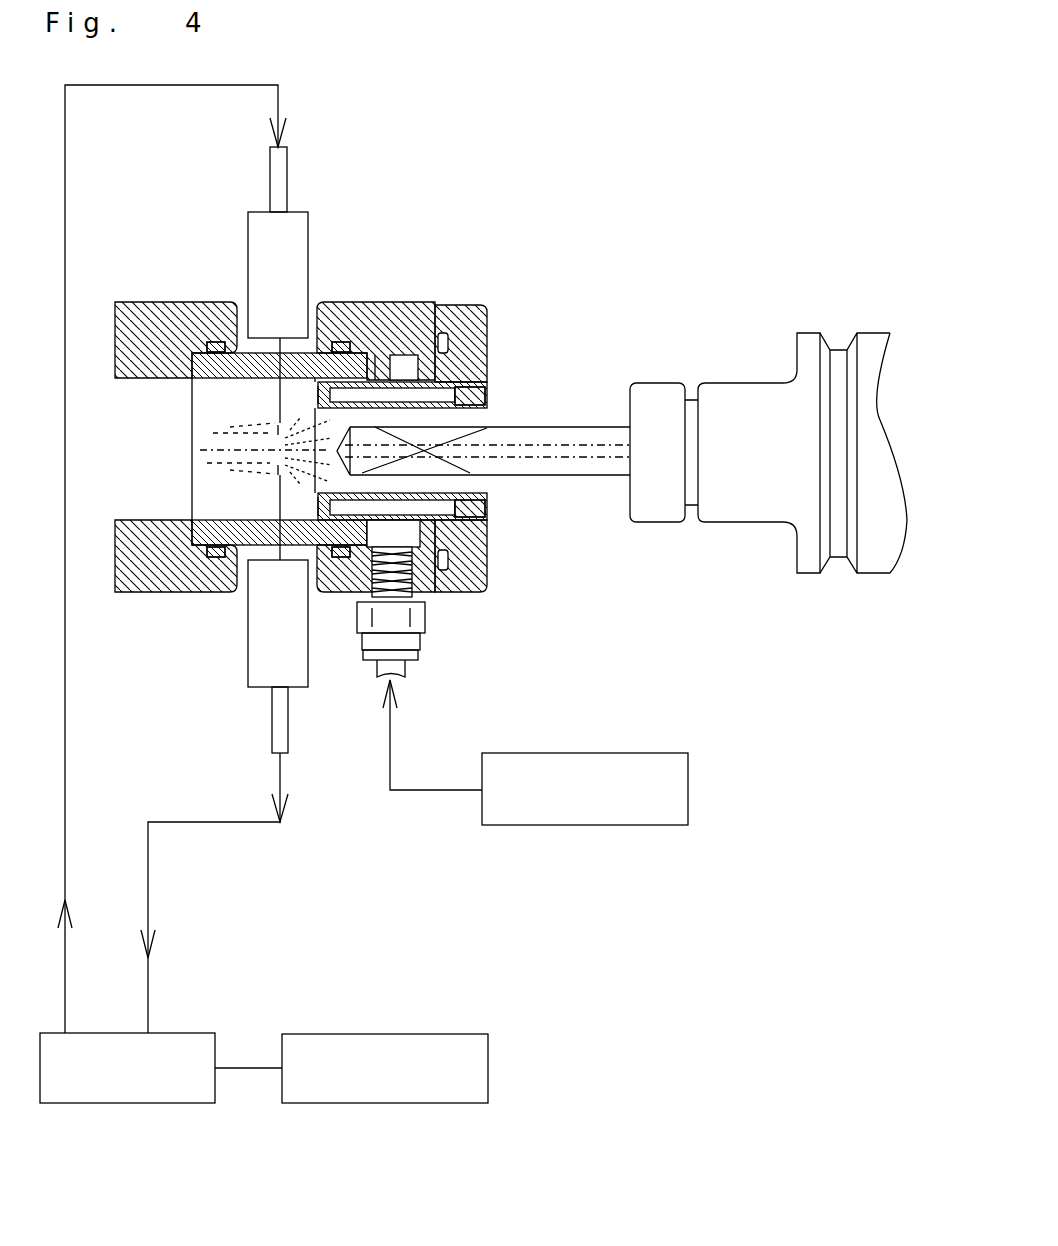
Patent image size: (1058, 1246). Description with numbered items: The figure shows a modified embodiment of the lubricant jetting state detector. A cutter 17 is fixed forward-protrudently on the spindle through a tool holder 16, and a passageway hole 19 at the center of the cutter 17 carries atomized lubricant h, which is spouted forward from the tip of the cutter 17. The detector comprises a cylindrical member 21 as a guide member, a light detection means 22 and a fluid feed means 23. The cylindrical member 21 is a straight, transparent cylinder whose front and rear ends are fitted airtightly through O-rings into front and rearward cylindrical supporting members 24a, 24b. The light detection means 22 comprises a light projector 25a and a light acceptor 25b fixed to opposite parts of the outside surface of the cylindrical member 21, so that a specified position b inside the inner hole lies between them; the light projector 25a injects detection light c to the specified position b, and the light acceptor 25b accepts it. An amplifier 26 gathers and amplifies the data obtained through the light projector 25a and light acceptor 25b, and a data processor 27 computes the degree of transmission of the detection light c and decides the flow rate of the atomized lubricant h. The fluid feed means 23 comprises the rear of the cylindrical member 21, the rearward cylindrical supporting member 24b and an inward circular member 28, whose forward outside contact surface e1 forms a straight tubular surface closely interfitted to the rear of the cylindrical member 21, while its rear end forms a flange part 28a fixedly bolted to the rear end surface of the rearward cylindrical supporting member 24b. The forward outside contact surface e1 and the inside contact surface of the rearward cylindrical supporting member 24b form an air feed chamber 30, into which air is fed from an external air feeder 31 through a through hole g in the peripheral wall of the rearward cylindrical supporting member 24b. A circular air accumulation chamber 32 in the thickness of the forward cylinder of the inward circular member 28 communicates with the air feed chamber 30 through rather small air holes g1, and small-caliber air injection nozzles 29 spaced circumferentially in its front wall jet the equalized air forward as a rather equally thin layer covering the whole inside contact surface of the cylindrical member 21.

The tool holder 16 is at (743, 395).
The cutter 17 is at (540, 475).
The passageway hole 19 is at (608, 475).
The cylindrical member 21 is at (235, 356).
The light detection means 22 is at (385, 1069).
The fluid feed means 23 is at (535, 793).
The front cylindrical supporting member 24a is at (160, 305).
The rearward cylindrical supporting member 24b is at (412, 303).
The light projector 25a is at (291, 220).
The light acceptor 25b is at (258, 668).
The amplifier 26 is at (178, 1105).
The data processor 27 is at (436, 1105).
The inward circular member 28 is at (500, 424).
The flange part 28a is at (487, 575).
The air injection nozzle 29 is at (320, 393).
The air feed chamber 30 is at (442, 419).
The external air feeder 31 is at (633, 827).
The air accumulation chamber 32 is at (487, 393).
The detection light c is at (277, 413).
The atomized lubricant h is at (202, 450).
The specified position b is at (263, 452).
The forward outside contact surface e1 is at (382, 372).
The through hole g is at (428, 602).
The air holes g1 is at (393, 368).